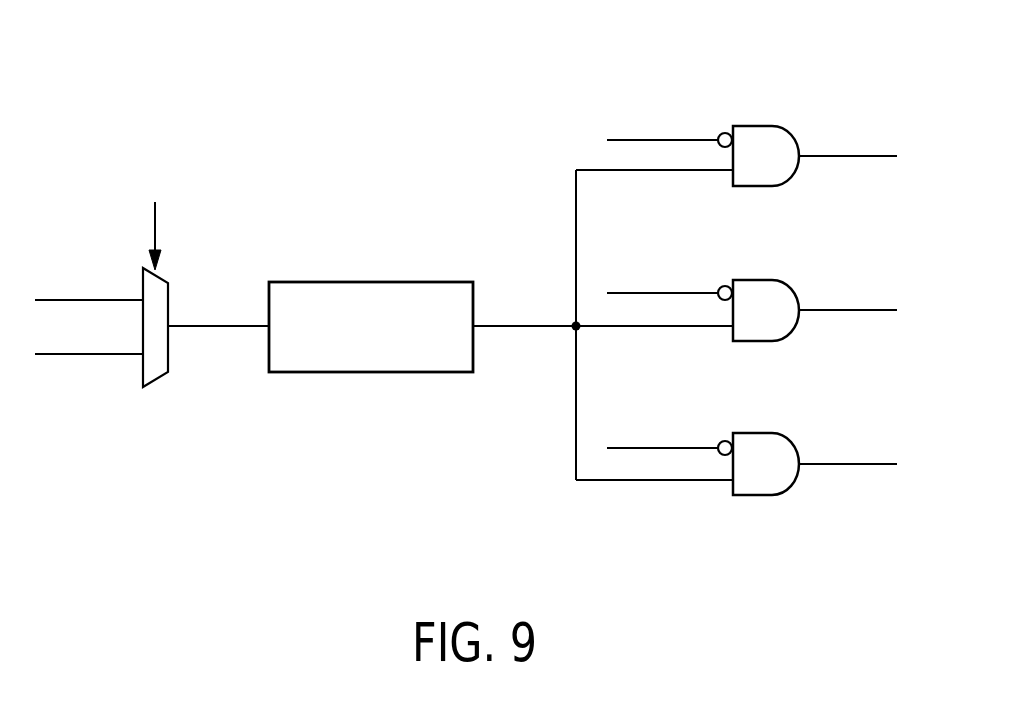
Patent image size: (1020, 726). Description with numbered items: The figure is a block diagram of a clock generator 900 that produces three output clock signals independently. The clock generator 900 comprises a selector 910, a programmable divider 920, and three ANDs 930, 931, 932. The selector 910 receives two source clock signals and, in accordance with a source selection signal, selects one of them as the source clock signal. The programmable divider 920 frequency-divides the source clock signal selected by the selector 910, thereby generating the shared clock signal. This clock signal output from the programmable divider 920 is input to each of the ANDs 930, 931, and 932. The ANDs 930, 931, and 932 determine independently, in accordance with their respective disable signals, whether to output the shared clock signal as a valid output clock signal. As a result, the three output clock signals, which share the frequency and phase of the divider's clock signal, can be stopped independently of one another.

The clock generator 900 is at (110, 535).
The selector 910 is at (155, 375).
The programmable divider 920 is at (375, 372).
The AND 930 is at (762, 126).
The AND 931 is at (762, 280).
The AND 932 is at (762, 433).